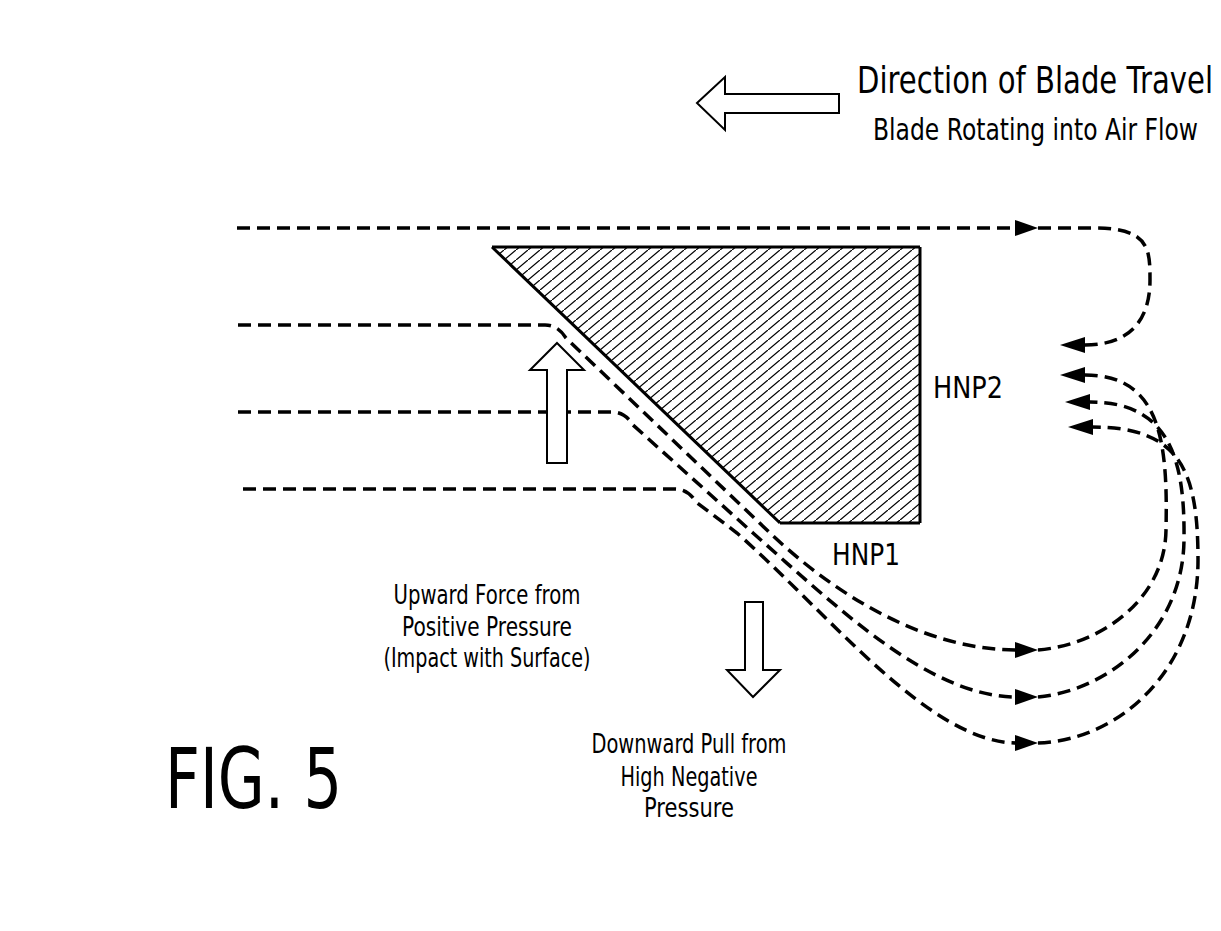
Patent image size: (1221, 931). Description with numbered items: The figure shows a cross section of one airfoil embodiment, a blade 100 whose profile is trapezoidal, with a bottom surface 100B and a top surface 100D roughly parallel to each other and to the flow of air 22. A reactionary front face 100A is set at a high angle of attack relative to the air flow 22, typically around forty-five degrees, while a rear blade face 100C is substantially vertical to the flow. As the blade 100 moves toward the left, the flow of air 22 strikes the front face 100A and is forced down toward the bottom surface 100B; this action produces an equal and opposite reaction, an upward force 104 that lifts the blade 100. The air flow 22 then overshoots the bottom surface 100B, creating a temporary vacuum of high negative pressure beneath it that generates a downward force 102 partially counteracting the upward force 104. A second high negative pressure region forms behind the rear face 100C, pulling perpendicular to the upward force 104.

The blade design 100 is at (702, 320).
The reactionary front face 100A is at (526, 288).
The bottom surface 100B is at (906, 538).
The rear blade face 100C is at (923, 353).
The top surface 100D is at (862, 244).
The flow of air 22 is at (298, 230).
The downward force 102 is at (758, 678).
The upward force 104 is at (550, 458).